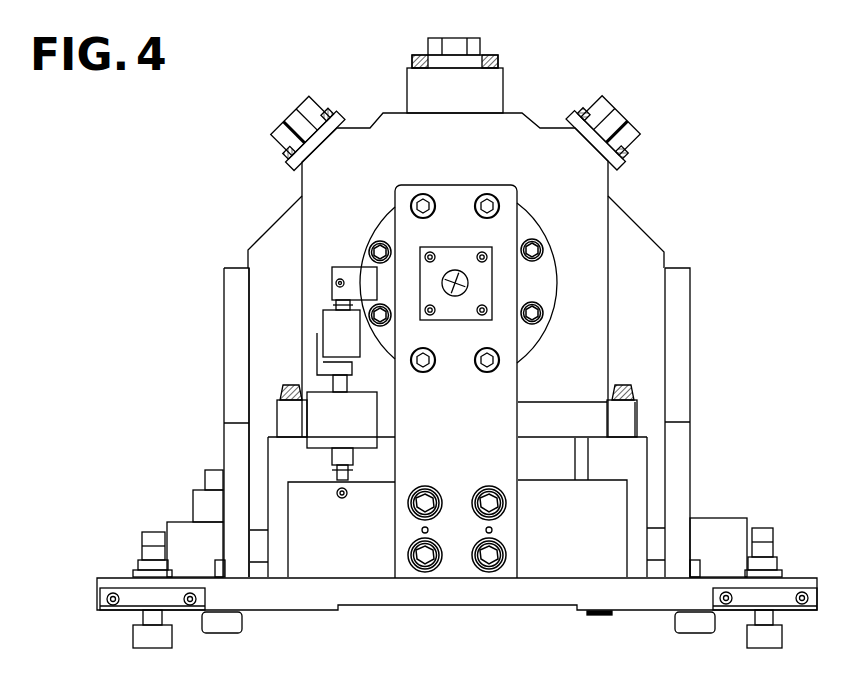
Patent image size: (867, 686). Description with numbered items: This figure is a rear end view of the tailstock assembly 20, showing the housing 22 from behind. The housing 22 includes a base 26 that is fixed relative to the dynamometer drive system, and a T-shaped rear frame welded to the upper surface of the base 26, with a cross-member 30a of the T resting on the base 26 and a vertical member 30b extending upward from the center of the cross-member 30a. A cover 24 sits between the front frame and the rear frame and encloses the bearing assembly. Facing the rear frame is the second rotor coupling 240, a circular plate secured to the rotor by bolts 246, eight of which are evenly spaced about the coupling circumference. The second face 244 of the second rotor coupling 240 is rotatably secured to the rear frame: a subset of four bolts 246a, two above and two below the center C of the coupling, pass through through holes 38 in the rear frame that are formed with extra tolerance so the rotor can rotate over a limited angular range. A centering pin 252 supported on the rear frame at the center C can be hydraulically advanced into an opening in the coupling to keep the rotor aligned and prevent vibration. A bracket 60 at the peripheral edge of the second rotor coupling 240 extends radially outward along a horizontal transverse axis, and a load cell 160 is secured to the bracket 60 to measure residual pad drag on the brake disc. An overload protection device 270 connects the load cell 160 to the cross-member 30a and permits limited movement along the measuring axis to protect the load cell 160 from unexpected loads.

The tailstock assembly 20 is at (691, 71).
The housing 22 is at (303, 195).
The cover 24 is at (343, 130).
The base 26 is at (633, 602).
The cross-member 30a is at (615, 512).
The vertical member 30b is at (400, 218).
The through holes 38 is at (412, 206).
The bracket 60 is at (330, 298).
The load cell 160 is at (332, 325).
The second rotor coupling 240 is at (585, 266).
The second face 244 is at (545, 240).
The bolts 246 is at (372, 313).
The subset of bolts 246a is at (480, 200).
The centering pin 252 is at (385, 222).
The overload protection device 270 is at (323, 412).
The center C is at (450, 275).